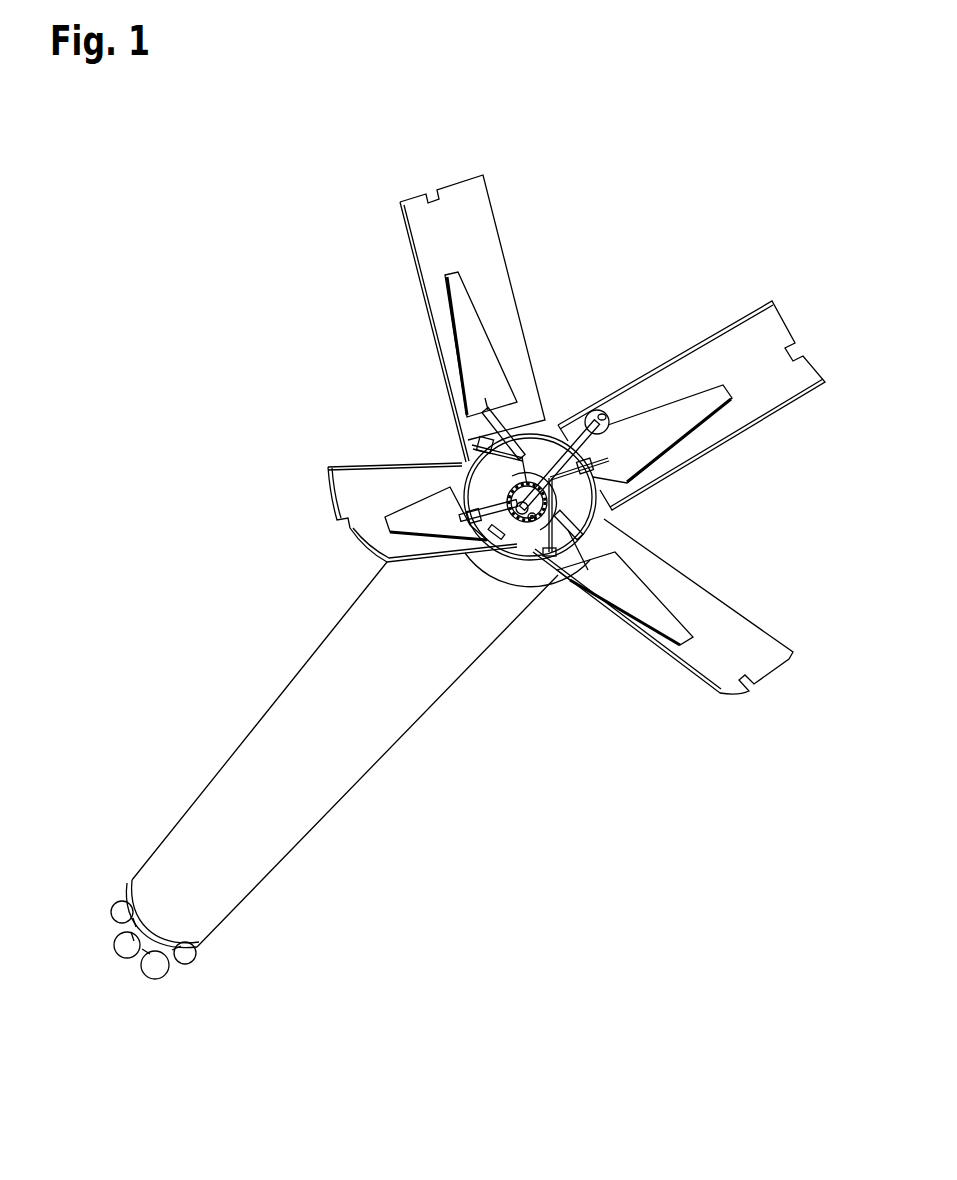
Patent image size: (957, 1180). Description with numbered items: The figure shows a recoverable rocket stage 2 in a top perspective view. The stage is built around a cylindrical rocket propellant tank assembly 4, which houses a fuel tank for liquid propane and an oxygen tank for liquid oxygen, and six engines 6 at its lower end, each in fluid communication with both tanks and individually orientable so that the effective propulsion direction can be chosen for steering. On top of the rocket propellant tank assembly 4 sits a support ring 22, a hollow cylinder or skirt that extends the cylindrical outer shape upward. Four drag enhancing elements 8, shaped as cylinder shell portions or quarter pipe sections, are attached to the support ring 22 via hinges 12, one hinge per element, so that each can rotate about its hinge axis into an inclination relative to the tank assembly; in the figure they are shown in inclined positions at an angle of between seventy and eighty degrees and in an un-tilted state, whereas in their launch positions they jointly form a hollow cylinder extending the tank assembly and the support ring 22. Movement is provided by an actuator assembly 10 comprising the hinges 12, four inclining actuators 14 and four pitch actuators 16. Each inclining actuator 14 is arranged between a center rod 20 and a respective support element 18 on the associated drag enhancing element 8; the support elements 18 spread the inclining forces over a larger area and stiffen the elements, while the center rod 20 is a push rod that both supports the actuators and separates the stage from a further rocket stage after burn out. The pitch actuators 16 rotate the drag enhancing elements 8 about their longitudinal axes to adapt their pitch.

The recoverable rocket stage 2 is at (166, 542).
The rocket propellant tank assembly 4 is at (403, 712).
The engines 6 is at (125, 953).
The drag enhancing elements 8 is at (800, 377).
The actuator assembly 10 is at (553, 400).
The hinges 12 is at (555, 575).
The inclining actuators 14 is at (502, 500).
The pitch actuators 16 is at (480, 445).
The support elements 18 is at (702, 415).
The center rod 20 is at (590, 412).
The support ring 22 is at (520, 572).